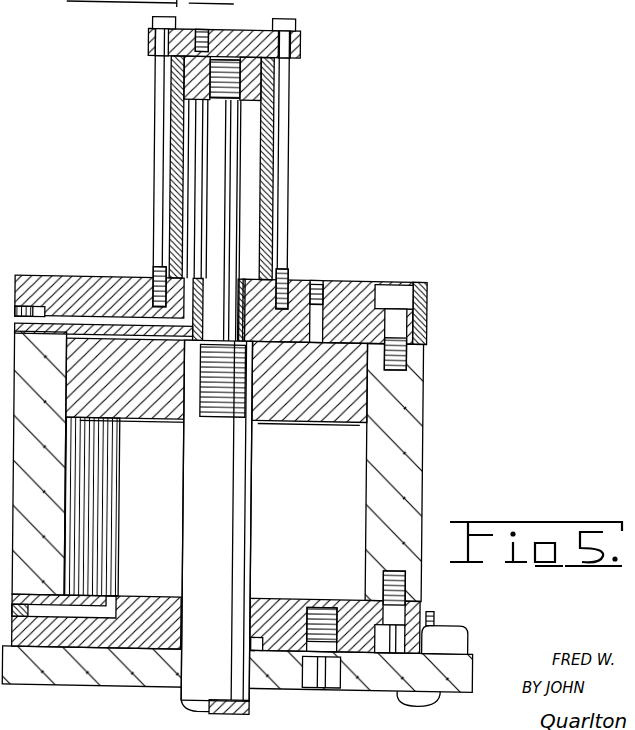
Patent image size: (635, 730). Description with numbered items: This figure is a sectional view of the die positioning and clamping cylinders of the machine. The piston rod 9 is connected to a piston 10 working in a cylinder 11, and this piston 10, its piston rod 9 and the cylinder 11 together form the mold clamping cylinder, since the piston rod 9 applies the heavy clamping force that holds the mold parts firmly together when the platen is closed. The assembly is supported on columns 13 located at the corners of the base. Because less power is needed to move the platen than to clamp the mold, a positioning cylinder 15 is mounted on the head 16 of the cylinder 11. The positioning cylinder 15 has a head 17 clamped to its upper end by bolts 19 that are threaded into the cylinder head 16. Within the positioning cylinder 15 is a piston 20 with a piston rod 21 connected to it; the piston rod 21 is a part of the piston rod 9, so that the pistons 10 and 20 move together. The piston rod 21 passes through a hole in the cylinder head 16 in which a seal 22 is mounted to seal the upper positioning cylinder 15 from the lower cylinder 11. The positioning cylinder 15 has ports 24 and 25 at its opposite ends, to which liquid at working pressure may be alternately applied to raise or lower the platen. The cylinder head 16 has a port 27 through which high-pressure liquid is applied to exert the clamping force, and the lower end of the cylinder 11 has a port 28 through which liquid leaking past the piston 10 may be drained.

The piston rod 9 is at (245, 511).
The piston 10 is at (298, 419).
The cylinder 11 is at (420, 452).
The columns 13 is at (405, 694).
The positioning cylinder 15 is at (268, 120).
The cylinder head 16 is at (363, 281).
The head 17 is at (262, 31).
The bolts 19 is at (150, 187).
The piston 20 is at (259, 79).
The piston rod 21 is at (230, 213).
The seal 22 is at (205, 282).
The port 24 is at (45, 314).
The port 25 is at (198, 31).
The port 27 is at (317, 281).
The port 28 is at (114, 602).